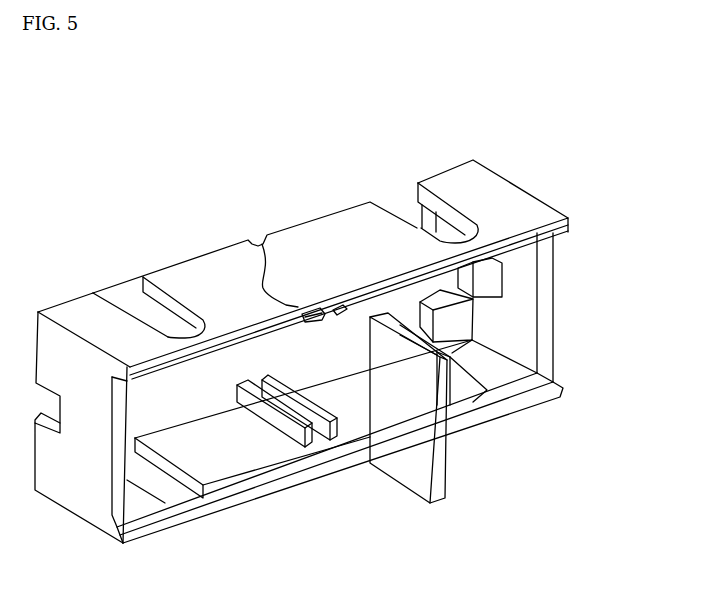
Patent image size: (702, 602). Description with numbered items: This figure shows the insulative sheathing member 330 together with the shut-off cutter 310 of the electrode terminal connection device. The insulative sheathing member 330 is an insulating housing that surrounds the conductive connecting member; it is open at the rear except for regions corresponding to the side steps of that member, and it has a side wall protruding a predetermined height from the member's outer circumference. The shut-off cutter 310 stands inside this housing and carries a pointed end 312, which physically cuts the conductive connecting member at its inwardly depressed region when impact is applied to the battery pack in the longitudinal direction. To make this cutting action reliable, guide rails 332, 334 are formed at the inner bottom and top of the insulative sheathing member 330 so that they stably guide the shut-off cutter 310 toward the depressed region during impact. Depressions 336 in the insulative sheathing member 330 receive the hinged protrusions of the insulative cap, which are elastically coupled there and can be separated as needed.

The shut-off cutter 310 is at (412, 468).
The pointed end 312 is at (375, 317).
The insulative sheathing member 330 is at (470, 191).
The guide rail 332 is at (305, 450).
The guide rail 334 is at (240, 246).
The depression 336 is at (143, 317).